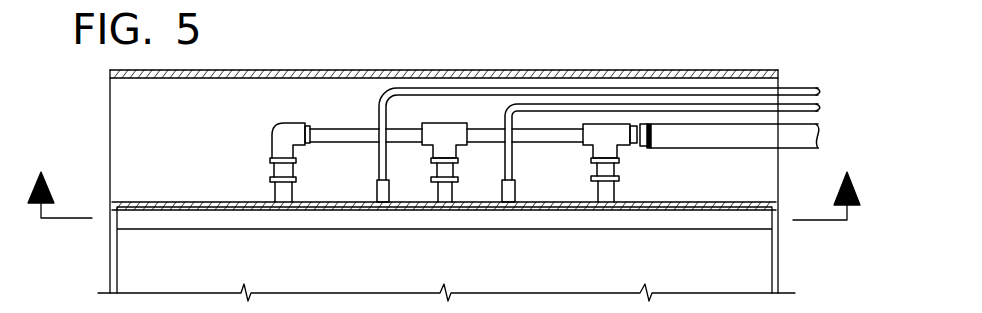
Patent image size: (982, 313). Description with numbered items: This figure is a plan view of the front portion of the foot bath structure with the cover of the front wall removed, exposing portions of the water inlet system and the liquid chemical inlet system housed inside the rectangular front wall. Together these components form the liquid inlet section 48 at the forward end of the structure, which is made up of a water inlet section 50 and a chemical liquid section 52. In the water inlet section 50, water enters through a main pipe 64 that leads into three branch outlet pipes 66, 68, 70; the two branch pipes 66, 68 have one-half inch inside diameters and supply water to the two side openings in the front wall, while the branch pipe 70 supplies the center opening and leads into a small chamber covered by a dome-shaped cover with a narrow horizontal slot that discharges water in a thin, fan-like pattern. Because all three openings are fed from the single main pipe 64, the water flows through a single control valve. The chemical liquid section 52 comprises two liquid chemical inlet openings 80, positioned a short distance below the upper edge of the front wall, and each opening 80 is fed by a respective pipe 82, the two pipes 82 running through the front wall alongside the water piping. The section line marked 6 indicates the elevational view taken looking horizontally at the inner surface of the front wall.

The liquid inlet section 48 is at (361, 77).
The water inlet section 50 is at (316, 117).
The chemical liquid section 52 is at (622, 77).
The main pipe 64 is at (705, 139).
The branch outlet pipe 66 is at (282, 190).
The branch outlet pipe 68 is at (607, 192).
The branch outlet pipe 70 is at (437, 193).
The liquid chemical inlet openings 80 is at (377, 188).
The pipes 82 is at (541, 110).
The section line 6- 6 is at (444, 182).